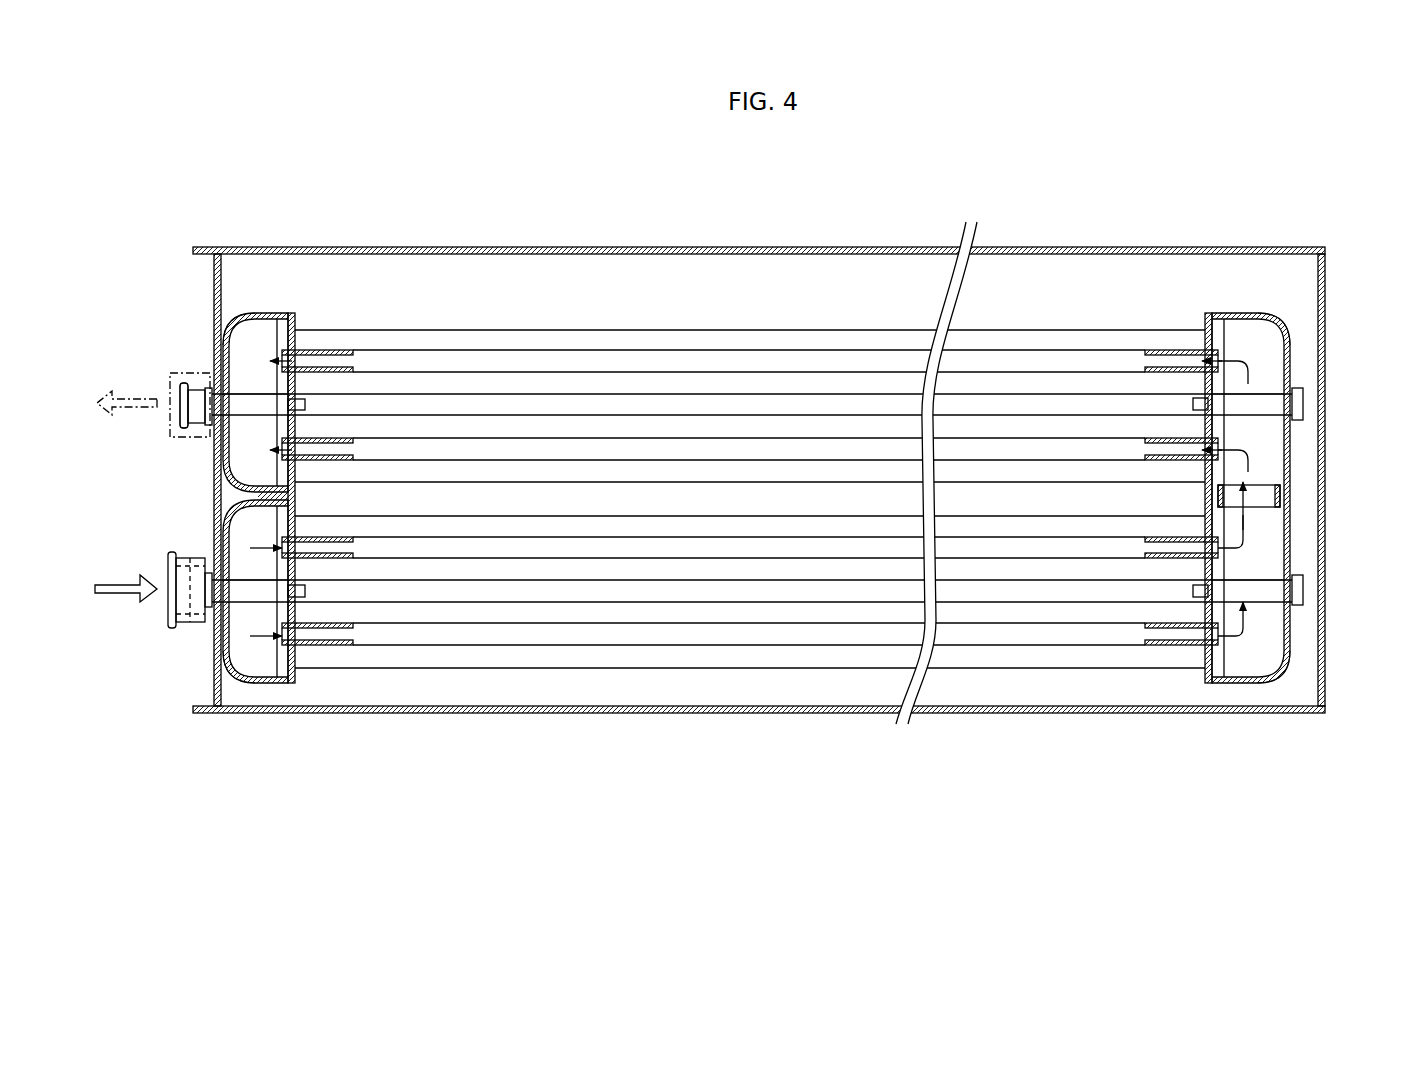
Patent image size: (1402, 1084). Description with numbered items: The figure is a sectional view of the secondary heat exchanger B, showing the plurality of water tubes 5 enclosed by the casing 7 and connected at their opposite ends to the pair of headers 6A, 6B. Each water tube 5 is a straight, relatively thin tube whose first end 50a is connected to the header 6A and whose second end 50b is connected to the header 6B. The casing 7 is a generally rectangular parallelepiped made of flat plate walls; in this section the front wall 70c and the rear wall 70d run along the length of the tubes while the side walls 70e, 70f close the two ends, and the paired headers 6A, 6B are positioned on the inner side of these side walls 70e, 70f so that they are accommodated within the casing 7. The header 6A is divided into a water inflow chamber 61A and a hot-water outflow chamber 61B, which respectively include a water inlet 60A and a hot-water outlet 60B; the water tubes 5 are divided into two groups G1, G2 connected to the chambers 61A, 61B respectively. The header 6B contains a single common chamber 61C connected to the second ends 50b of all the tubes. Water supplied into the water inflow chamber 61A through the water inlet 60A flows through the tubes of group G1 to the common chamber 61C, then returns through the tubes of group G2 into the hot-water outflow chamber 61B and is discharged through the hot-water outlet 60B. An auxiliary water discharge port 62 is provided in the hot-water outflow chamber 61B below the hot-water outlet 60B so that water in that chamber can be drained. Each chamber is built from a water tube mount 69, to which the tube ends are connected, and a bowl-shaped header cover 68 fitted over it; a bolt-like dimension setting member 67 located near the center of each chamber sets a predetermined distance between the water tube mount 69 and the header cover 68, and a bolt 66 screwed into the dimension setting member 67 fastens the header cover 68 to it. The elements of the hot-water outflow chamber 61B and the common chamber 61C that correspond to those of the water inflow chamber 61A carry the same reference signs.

The casing 7 is at (756, 462).
The secondary heat exchanger B is at (698, 236).
The water tubes 5 is at (750, 522).
The header 6A is at (713, 482).
The header 6B is at (1302, 432).
The first ends 50a is at (298, 350).
The second ends 50b is at (1202, 438).
The water inlet 60A is at (170, 610).
The hot-water outlet 60B is at (195, 378).
The water inflow chamber 61A is at (247, 642).
The hot-water outflow chamber 61B is at (243, 352).
The common chamber 61C is at (1270, 545).
The auxiliary water discharge port 62 is at (182, 410).
The bolt 66 is at (207, 413).
The dimension setting member 67 is at (243, 410).
The header cover 68 is at (237, 318).
The water tube mount 69 is at (287, 313).
The front wall 70c is at (640, 713).
The rear wall 70d is at (531, 247).
The side wall 70e is at (214, 285).
The side wall 70f is at (1325, 314).
The group of water tubes G1 is at (710, 505).
The group of water tubes G2 is at (750, 522).